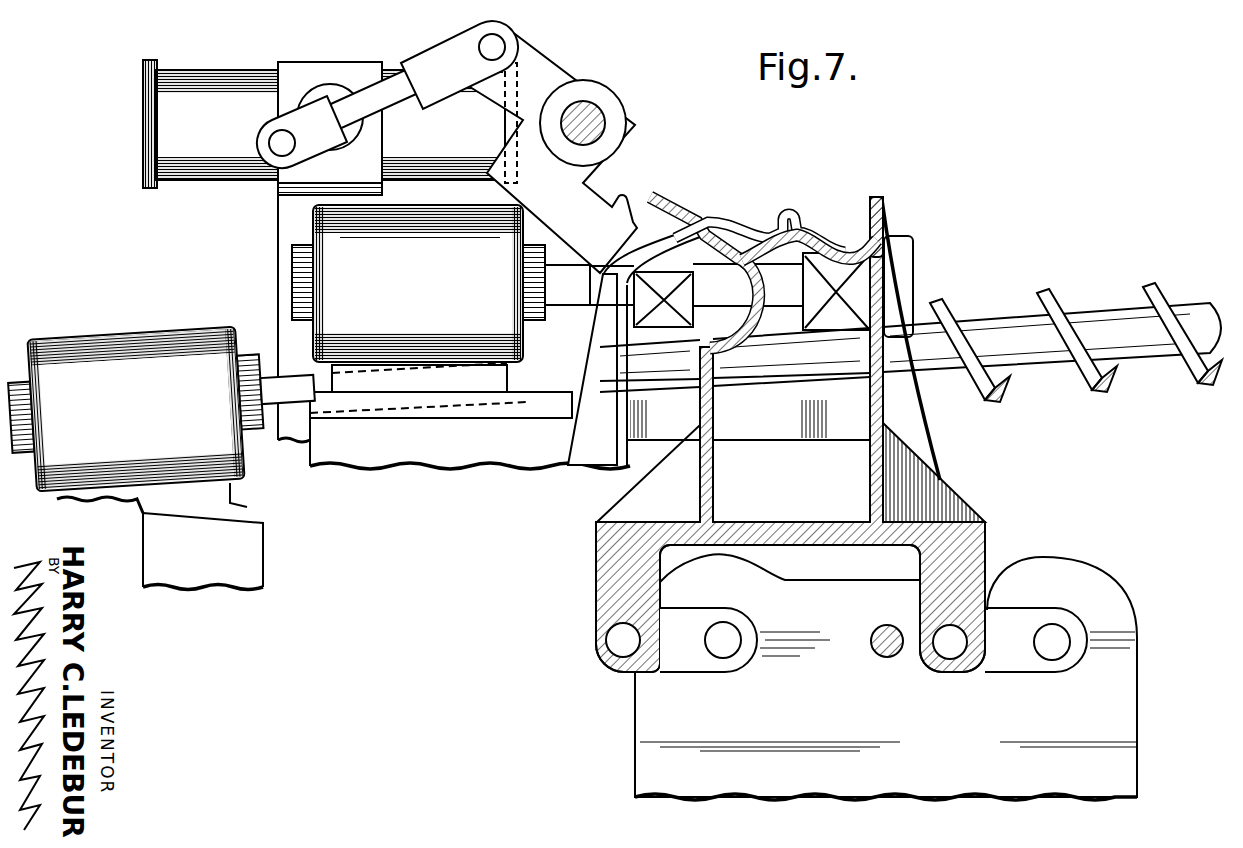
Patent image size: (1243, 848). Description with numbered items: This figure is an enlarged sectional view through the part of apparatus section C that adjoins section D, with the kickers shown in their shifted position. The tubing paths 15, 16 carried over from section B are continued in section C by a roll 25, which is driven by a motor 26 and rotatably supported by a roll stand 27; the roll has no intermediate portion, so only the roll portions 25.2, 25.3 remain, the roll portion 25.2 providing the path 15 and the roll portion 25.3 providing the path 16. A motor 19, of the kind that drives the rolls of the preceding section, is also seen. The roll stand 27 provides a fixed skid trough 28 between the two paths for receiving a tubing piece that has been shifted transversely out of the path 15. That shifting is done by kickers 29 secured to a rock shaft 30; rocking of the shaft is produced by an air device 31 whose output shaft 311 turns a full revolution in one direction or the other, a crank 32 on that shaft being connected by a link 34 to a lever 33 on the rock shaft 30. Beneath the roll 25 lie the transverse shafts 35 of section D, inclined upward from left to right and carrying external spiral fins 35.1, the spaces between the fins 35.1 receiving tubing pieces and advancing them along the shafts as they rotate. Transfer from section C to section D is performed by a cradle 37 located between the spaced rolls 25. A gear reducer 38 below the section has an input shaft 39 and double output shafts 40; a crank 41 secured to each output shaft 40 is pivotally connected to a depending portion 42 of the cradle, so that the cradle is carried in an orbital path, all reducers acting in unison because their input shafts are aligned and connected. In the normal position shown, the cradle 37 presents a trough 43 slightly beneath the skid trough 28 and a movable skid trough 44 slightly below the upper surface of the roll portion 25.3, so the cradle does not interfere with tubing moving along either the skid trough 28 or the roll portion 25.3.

The second tubing path 15 is at (668, 182).
The second tubing path 16 is at (827, 227).
The motor 19 is at (108, 357).
The roll 25 is at (782, 312).
The roll portion 25.2 is at (643, 300).
The roll portion 25.3 is at (853, 283).
The motor 26 is at (432, 297).
The roll stand 27 is at (567, 443).
The skid trough 28 is at (763, 233).
The kicker 29 is at (680, 194).
The rock shaft 30 is at (597, 120).
The device 31 is at (237, 178).
The output shaft 311 is at (303, 90).
The crank 32 is at (333, 93).
The lever 33 is at (547, 70).
The link 34 is at (440, 53).
The shaft 35 is at (1077, 327).
The spiral fin 35.1 is at (930, 323).
The cradle 37 is at (863, 480).
The gear reducer 38 is at (870, 582).
The input shaft 39 is at (883, 657).
The output shaft 40 is at (730, 650).
The crank 41 is at (685, 660).
The depending portion 42 is at (605, 577).
The trough 43 is at (729, 250).
The trough 44 is at (875, 238).